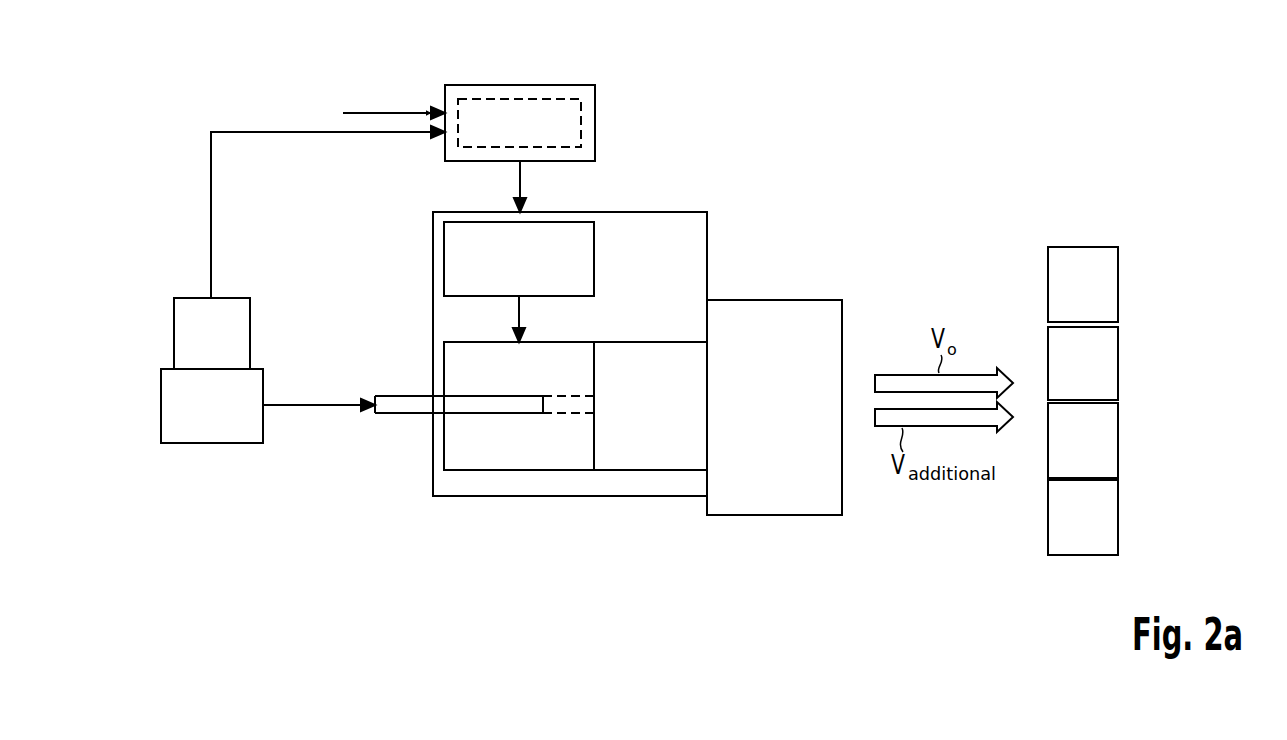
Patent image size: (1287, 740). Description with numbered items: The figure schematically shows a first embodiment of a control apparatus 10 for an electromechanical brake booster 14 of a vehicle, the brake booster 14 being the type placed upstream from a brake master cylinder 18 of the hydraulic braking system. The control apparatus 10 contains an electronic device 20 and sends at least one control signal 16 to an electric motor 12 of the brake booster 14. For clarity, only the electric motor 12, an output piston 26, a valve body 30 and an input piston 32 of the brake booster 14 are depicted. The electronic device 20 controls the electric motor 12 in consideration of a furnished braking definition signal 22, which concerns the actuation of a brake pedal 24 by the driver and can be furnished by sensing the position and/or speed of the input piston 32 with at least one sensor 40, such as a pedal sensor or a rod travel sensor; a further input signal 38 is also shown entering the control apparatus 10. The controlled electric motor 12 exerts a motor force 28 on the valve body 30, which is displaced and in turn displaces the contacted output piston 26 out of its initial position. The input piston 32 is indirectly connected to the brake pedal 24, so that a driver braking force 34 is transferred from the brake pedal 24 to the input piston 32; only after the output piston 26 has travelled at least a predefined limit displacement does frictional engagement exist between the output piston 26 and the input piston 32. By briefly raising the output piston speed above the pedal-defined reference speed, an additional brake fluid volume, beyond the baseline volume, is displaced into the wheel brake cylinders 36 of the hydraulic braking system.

The control apparatus 10 is at (595, 118).
The electric motor 12 is at (594, 257).
The electromechanical brake booster 14 is at (707, 258).
The control signal 16 is at (520, 183).
The brake master cylinder 18 is at (777, 515).
The electronic device 20 is at (513, 97).
The braking definition signal 22 is at (211, 207).
The brake pedal 24 is at (215, 443).
The output piston 26 is at (636, 470).
The motor force 28 is at (520, 312).
The valve body 30 is at (498, 470).
The input piston 32 is at (400, 415).
The driver braking force 34 is at (315, 405).
The wheel brake cylinders 36 is at (1118, 285).
The input signal line 38 is at (398, 112).
The sensor 40 is at (250, 322).